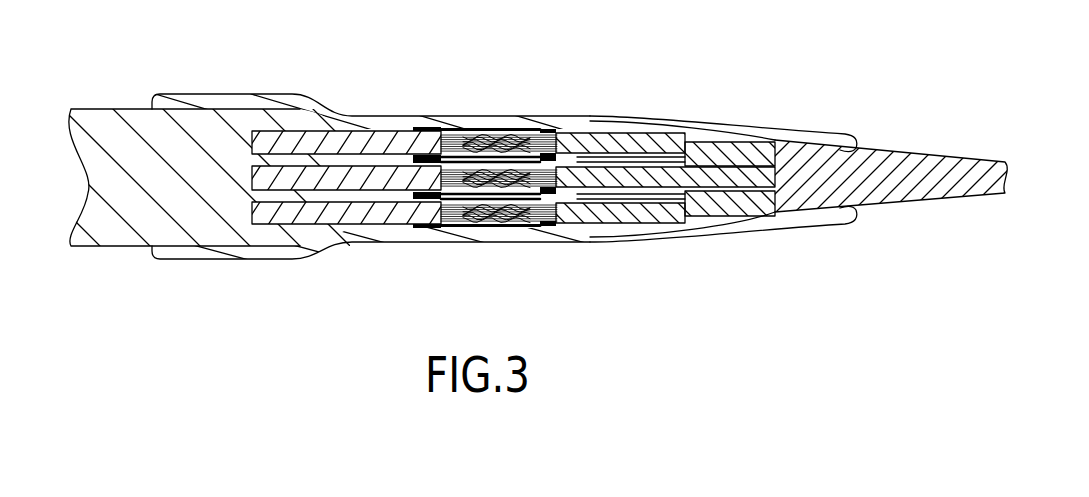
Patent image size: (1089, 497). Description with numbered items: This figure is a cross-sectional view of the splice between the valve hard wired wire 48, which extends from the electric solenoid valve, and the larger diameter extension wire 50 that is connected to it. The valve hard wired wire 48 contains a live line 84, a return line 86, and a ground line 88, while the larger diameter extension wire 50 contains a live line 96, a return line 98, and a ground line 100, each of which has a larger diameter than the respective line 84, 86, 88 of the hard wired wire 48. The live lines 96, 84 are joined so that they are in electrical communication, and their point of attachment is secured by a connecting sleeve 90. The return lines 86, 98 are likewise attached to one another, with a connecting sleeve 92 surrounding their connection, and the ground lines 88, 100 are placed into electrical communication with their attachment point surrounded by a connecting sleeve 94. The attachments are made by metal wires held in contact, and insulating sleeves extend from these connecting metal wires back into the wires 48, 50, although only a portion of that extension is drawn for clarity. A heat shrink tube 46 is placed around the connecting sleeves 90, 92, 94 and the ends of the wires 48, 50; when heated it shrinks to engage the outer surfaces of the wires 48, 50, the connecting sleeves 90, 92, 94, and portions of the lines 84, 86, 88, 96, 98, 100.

The heat shrink tube 46 is at (300, 88).
The valve hard wired wire 48 is at (933, 160).
The larger diameter extension wire 50 is at (100, 120).
The live line 84 is at (750, 153).
The return line 86 is at (657, 177).
The ground line 88 is at (729, 200).
The connecting sleeve 90 is at (575, 133).
The connecting sleeve 92 is at (577, 160).
The connecting sleeve 94 is at (578, 226).
The live line 96 is at (347, 143).
The return line 98 is at (286, 176).
The ground line 100 is at (346, 212).